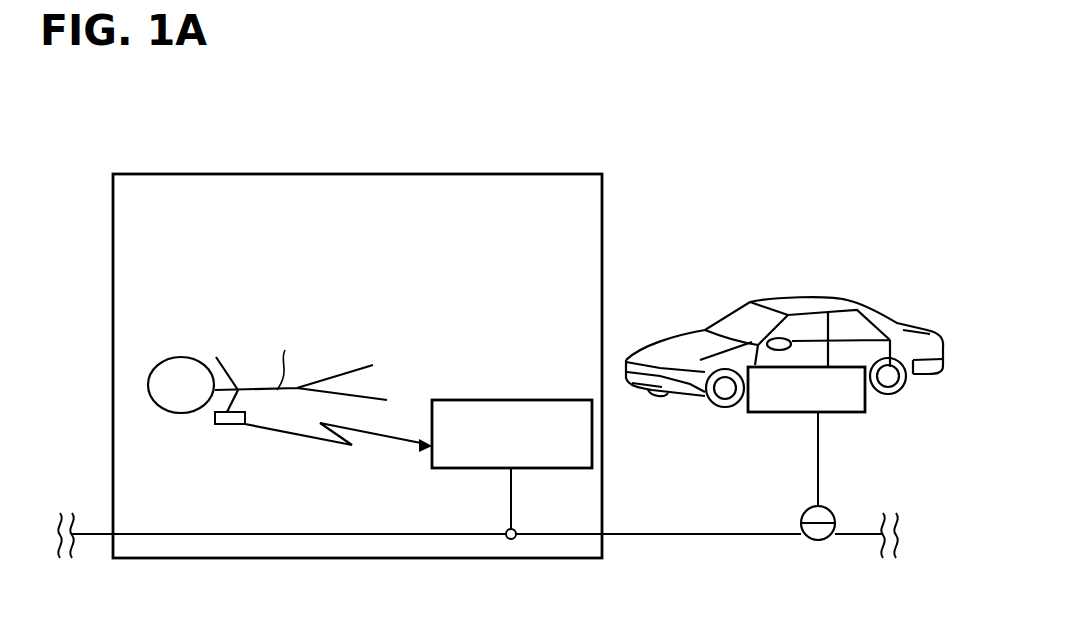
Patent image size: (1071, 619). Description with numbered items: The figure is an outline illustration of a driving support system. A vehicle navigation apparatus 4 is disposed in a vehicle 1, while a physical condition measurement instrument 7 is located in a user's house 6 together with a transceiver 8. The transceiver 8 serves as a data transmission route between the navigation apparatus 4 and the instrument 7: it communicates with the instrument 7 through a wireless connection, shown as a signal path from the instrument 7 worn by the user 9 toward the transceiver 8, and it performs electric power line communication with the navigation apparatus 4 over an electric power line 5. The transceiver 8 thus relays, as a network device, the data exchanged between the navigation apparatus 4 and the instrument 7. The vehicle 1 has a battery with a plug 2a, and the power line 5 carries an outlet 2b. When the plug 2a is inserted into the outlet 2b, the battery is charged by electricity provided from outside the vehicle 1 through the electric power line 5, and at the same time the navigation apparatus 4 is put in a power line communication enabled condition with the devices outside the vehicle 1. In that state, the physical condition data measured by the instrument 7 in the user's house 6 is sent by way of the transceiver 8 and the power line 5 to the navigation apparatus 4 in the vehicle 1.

The vehicle 1 is at (819, 277).
The plug 2a is at (807, 513).
The outlet 2b is at (823, 540).
The vehicle navigation apparatus 4 is at (848, 413).
The electric power line 5 is at (645, 533).
The user's house 6 is at (617, 230).
The physical condition measurement instrument 7 is at (220, 425).
The transceiver 8 is at (528, 400).
The user 9 is at (183, 355).